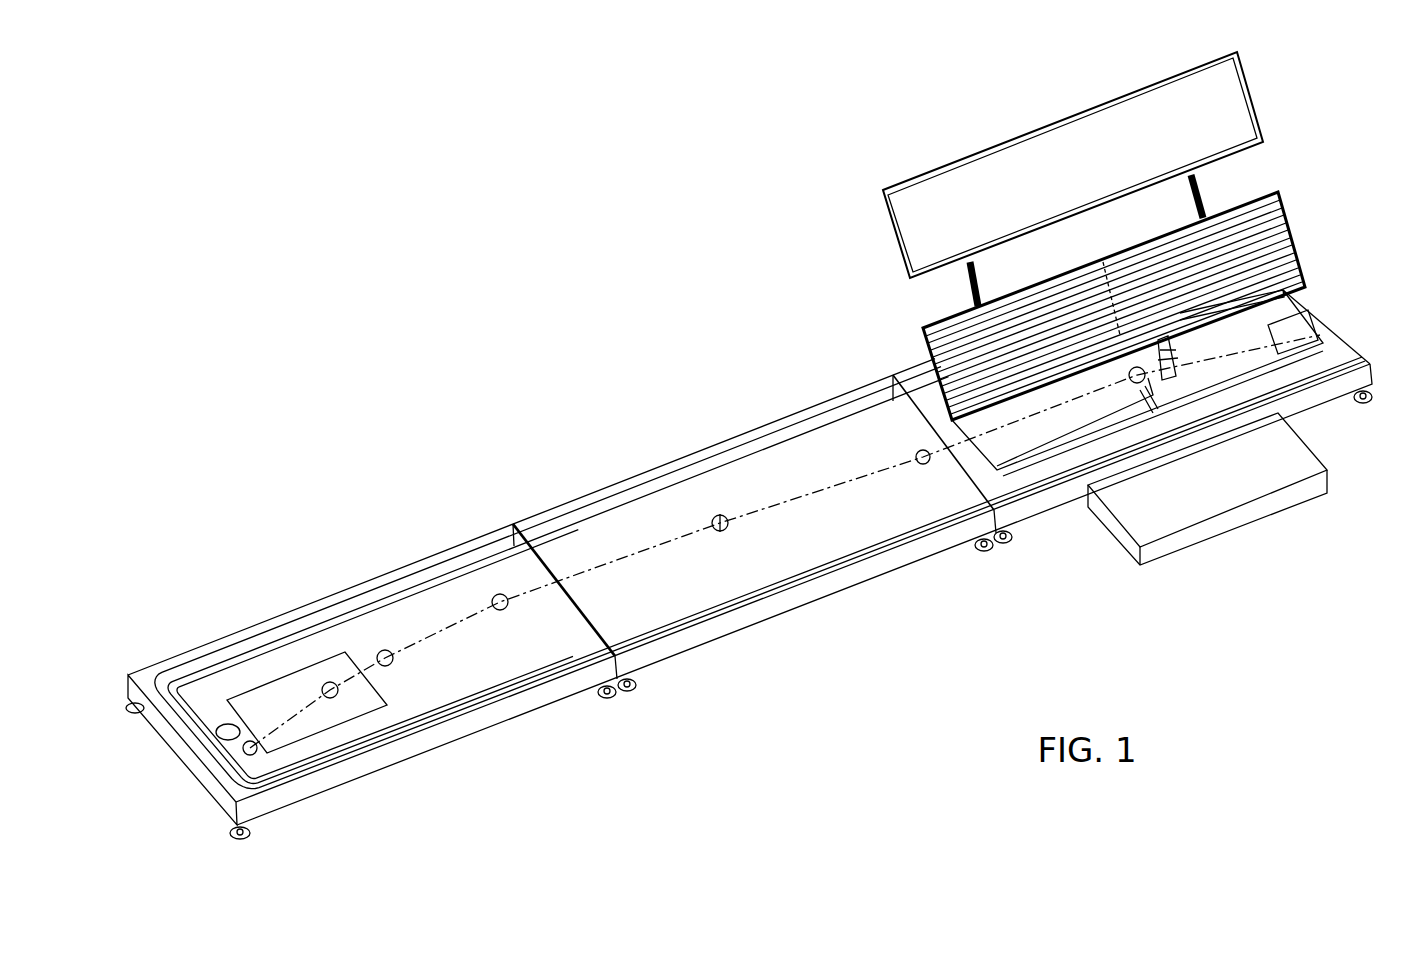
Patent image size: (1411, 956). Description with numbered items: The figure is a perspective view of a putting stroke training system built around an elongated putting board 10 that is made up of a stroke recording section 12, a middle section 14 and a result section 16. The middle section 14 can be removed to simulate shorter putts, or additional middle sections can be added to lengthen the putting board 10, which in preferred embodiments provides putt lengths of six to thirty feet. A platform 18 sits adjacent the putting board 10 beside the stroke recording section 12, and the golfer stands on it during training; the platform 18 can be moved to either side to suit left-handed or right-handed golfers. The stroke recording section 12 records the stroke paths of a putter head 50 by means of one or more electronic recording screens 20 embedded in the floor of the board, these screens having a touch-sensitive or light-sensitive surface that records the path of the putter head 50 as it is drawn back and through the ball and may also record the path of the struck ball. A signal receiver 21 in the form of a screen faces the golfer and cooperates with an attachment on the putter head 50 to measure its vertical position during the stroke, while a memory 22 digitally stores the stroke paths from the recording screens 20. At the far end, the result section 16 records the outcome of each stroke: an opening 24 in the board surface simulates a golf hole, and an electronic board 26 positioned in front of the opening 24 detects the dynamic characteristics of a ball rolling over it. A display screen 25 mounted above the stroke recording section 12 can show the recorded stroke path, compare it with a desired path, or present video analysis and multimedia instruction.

The putting board 10 is at (870, 303).
The stroke recording section 12 is at (1344, 418).
The middle section 14 is at (766, 662).
The result section 16 is at (428, 770).
The platform 18 is at (1230, 482).
The electronic recording screens 20 is at (1193, 377).
The signal receiver 21 is at (950, 317).
The memory 22 is at (1312, 337).
The opening 24 is at (228, 732).
The display screen 25 is at (908, 180).
The electronic board 26 is at (288, 685).
The putter head 50 is at (1130, 372).